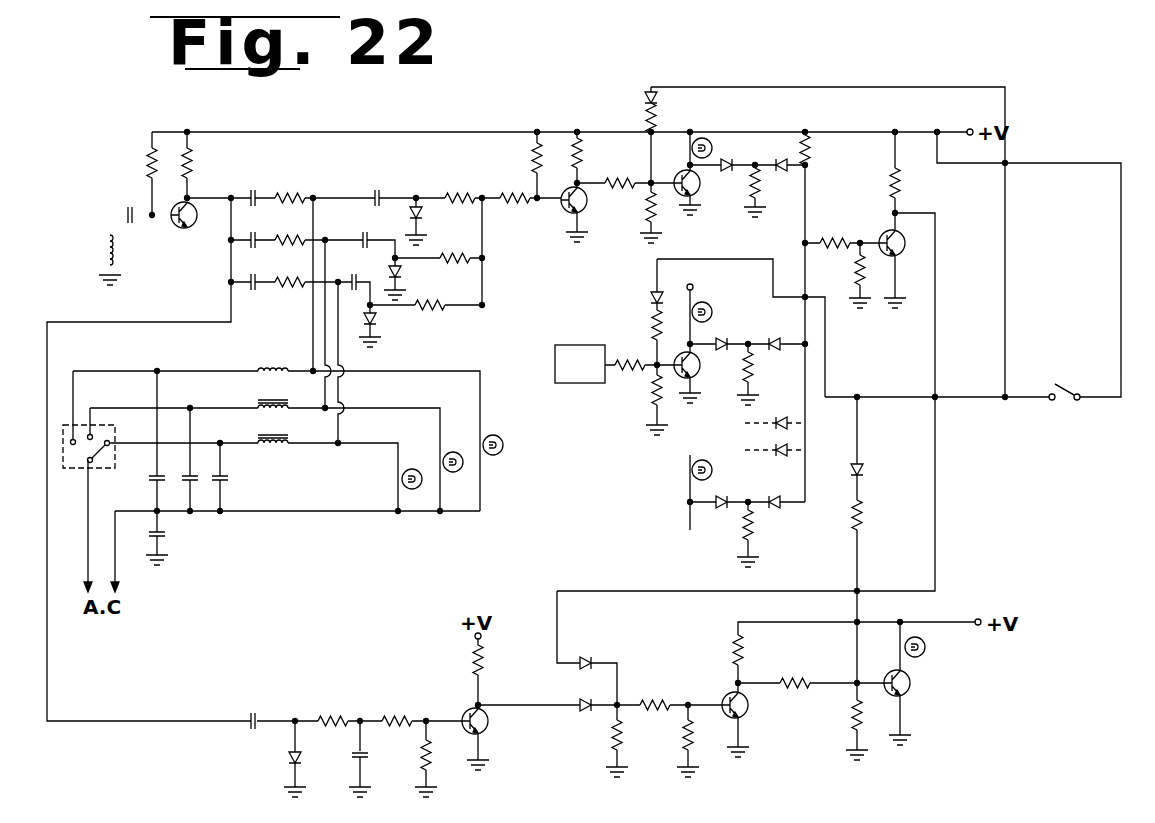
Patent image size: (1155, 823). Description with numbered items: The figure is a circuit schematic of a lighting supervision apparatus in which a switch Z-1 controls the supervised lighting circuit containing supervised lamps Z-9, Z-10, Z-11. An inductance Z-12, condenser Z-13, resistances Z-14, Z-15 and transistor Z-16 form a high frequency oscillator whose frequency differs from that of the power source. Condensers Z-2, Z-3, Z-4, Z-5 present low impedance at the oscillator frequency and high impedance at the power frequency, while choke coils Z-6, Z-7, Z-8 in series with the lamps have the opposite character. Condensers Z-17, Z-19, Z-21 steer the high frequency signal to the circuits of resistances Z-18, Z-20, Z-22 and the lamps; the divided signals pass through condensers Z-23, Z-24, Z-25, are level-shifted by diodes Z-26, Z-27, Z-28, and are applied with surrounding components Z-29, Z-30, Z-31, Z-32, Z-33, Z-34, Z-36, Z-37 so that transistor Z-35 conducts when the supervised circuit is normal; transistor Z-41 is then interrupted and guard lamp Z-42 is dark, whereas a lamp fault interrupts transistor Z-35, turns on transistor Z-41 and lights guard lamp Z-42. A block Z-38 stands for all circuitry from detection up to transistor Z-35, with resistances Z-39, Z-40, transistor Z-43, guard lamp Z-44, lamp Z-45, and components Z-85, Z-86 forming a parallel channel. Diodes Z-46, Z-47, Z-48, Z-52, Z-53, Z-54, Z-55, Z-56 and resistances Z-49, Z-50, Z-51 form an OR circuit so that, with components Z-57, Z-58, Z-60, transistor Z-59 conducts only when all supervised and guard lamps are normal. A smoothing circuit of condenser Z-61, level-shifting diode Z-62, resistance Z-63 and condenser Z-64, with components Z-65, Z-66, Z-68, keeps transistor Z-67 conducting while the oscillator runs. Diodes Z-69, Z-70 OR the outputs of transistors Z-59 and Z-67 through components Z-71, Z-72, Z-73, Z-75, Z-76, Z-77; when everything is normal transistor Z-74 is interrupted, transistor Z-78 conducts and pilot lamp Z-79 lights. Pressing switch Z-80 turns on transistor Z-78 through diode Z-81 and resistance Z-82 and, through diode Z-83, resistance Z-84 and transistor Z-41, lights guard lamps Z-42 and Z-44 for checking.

The switch Z-1 is at (73, 468).
The condenser Z-2 is at (153, 479).
The condenser Z-3 is at (194, 479).
The condenser Z-4 is at (224, 478).
The condenser Z-5 is at (164, 535).
The choke coil Z-6 is at (252, 436).
The choke coil Z-7 is at (252, 401).
The choke coil Z-8 is at (270, 361).
The supervised lamp Z-9 is at (400, 478).
The supervised lamp Z-10 is at (466, 469).
The supervised lamp Z-11 is at (500, 446).
The inductance Z-12 is at (104, 246).
The condenser Z-13 is at (126, 212).
The resistance Z-14 is at (146, 166).
The resistance Z-15 is at (192, 170).
The transistor Z-16 is at (181, 238).
The condenser Z-17 is at (253, 194).
The resistance Z-18 is at (286, 196).
The condenser Z-19 is at (252, 237).
The resistance Z-20 is at (288, 242).
The condenser Z-21 is at (242, 284).
The resistance Z-22 is at (287, 285).
The condenser Z-23 is at (376, 195).
The condenser Z-24 is at (362, 238).
The condenser Z-25 is at (352, 280).
The diode Z-26 is at (416, 212).
The diode Z-27 is at (402, 273).
The diode Z-28 is at (377, 322).
The resistor Z-29 is at (450, 195).
The resistor Z-30 is at (462, 264).
The resistor Z-31 is at (430, 308).
The resistor Z-32 is at (509, 195).
The resistor Z-33 is at (534, 161).
The resistor Z-34 is at (573, 147).
The transistor Z-35 is at (561, 210).
The resistor Z-36 is at (616, 181).
The resistor Z-37 is at (648, 208).
The detection circuitry block Z-38 is at (555, 355).
The resistor Z-39 is at (621, 369).
The resistor Z-40 is at (650, 401).
The transistor Z-41 is at (692, 190).
The guard lamp Z-42 is at (706, 142).
The transistor Z-43 is at (692, 368).
The guard lamp Z-44 is at (708, 306).
The lamp Z-45 is at (690, 469).
The diode Z-46 is at (727, 162).
The diode Z-47 is at (722, 338).
The diode Z-48 is at (718, 509).
The resistance Z-49 is at (762, 182).
The resistance Z-50 is at (753, 364).
The resistance Z-51 is at (755, 534).
The diode Z-52 is at (788, 157).
The diode Z-53 is at (772, 340).
The diode Z-54 is at (747, 425).
The diode Z-55 is at (780, 452).
The diode Z-56 is at (776, 506).
The resistor Z-57 is at (832, 240).
The resistor Z-58 is at (864, 296).
The transistor Z-59 is at (908, 248).
The resistor Z-60 is at (902, 182).
The condenser Z-61 is at (252, 715).
The diode Z-62 is at (287, 759).
The resistance Z-63 is at (328, 717).
The condenser Z-64 is at (355, 757).
The resistor Z-65 is at (392, 717).
The resistor Z-66 is at (422, 752).
The transistor Z-67 is at (486, 729).
The resistor Z-68 is at (474, 660).
The diode Z-69 is at (584, 659).
The diode Z-70 is at (575, 702).
The resistor Z-71 is at (612, 740).
The resistor Z-72 is at (655, 701).
The resistor Z-73 is at (682, 740).
The transistor Z-74 is at (740, 712).
The resistor Z-75 is at (735, 647).
The resistor Z-76 is at (793, 681).
The resistor Z-77 is at (853, 722).
The transistor Z-78 is at (912, 683).
The pilot lamp Z-79 is at (922, 646).
The switch Z-80 is at (1063, 380).
The diode Z-81 is at (862, 472).
The resistance Z-82 is at (862, 517).
The diode Z-83 is at (646, 95).
The resistance Z-84 is at (644, 117).
The diode Z-85 is at (650, 300).
The resistor Z-86 is at (650, 326).